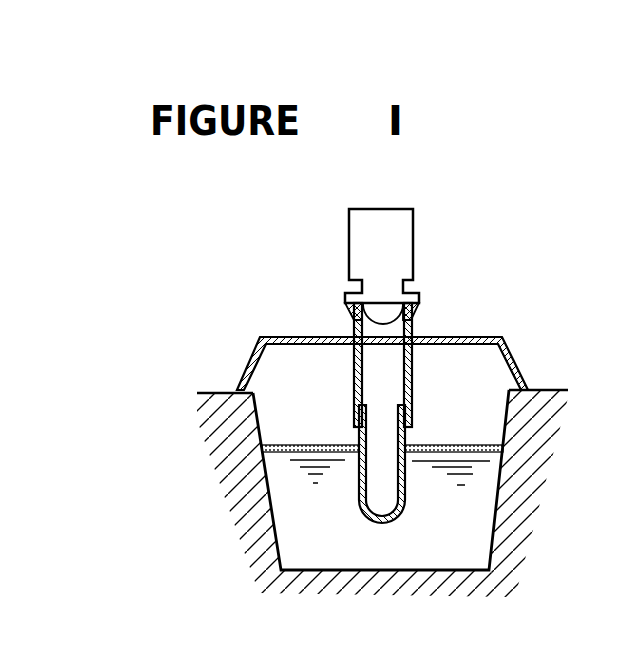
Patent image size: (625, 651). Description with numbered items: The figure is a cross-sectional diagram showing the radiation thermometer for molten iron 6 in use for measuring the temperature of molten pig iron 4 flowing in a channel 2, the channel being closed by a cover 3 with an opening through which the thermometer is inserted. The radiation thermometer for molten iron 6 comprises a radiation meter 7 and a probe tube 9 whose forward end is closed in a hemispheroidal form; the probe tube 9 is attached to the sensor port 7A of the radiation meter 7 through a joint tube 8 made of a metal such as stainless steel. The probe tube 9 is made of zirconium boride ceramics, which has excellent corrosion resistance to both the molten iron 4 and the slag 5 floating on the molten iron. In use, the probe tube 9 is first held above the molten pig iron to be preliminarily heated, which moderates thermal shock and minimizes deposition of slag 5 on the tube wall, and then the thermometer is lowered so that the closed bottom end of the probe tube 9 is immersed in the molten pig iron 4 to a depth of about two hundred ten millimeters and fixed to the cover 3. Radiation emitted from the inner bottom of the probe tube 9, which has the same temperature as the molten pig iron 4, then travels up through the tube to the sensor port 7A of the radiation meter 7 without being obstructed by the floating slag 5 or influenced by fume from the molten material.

The channel 2 is at (512, 428).
The cover 3 is at (518, 368).
The molten iron 4 is at (445, 541).
The slag 5 is at (438, 448).
The radiation thermometer for molten iron 6 is at (444, 259).
The radiation meter 7 is at (396, 229).
The sensor port 7A is at (417, 323).
The joint tube 8 is at (414, 383).
The probe tube 9 is at (405, 490).